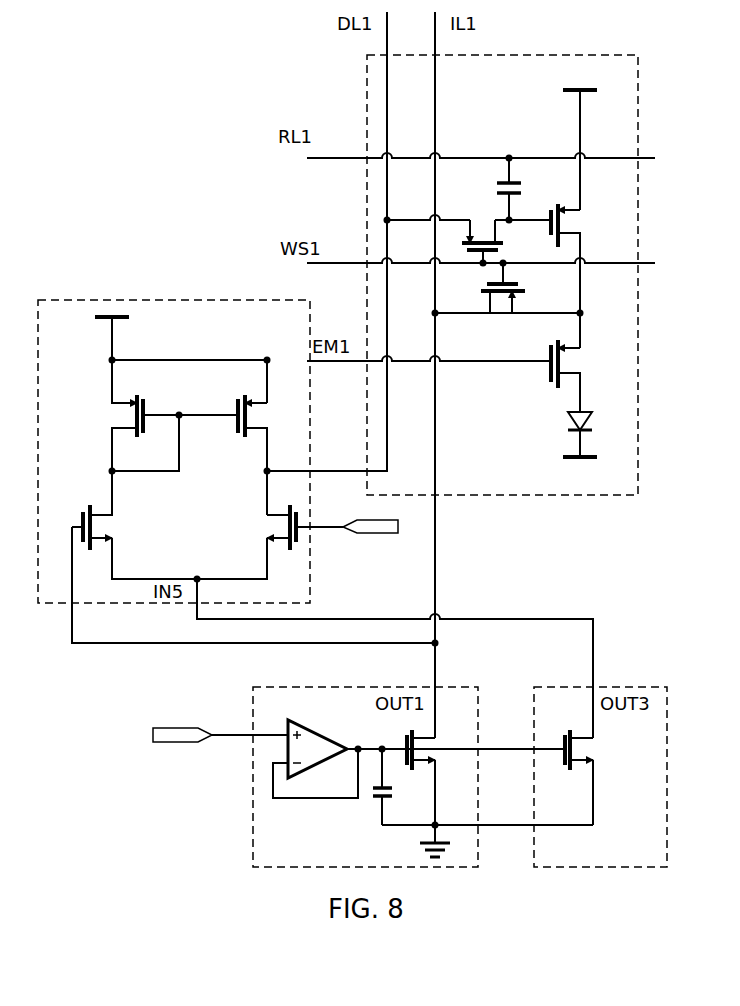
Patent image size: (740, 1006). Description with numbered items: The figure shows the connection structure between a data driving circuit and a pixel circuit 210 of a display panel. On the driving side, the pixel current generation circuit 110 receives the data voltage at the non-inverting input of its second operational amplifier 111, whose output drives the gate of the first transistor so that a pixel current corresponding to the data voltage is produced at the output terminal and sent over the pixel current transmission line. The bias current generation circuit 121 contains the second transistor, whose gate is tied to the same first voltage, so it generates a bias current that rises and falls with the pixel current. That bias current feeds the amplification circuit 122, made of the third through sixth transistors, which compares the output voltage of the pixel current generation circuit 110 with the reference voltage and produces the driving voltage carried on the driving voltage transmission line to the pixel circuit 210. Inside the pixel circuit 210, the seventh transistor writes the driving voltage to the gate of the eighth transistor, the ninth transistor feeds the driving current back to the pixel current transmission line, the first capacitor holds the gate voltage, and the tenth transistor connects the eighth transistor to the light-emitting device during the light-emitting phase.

The pixel circuit 210 is at (500, 55).
The amplification circuit 122 is at (232, 300).
The bias current generation circuit 121 is at (632, 687).
The pixel current generation circuit 110 is at (253, 793).
The second operational amplifier 111 is at (313, 732).